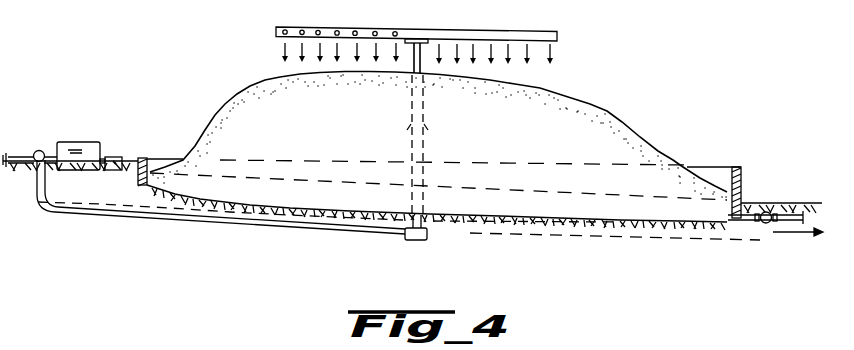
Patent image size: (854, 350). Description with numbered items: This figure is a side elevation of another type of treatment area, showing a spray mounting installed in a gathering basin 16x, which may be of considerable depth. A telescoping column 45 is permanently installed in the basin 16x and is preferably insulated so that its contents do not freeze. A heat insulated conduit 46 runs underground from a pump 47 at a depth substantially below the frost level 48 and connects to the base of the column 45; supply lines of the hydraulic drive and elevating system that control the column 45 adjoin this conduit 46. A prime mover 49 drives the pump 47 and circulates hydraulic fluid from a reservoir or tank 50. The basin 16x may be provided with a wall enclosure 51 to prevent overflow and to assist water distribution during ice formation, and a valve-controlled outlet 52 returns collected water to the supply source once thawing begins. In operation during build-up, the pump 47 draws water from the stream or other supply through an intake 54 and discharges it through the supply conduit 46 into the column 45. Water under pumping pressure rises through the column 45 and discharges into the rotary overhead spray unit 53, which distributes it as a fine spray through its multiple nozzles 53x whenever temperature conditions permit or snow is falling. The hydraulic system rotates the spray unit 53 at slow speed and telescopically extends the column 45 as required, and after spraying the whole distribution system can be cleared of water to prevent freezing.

The basin 16x is at (590, 218).
The telescoping column 45 is at (436, 138).
The heat insulated conduit 46 is at (93, 218).
The pump 47 is at (43, 151).
The frost level 48 is at (628, 237).
The prime mover 49 is at (85, 142).
The reservoir or tank 50 is at (117, 157).
The wall enclosure 51 is at (742, 168).
The valve-controlled outlet 52 is at (763, 225).
The rotary overhead spray unit 53 is at (552, 31).
The multiple nozzles 53x is at (320, 30).
The intake 54 is at (18, 155).